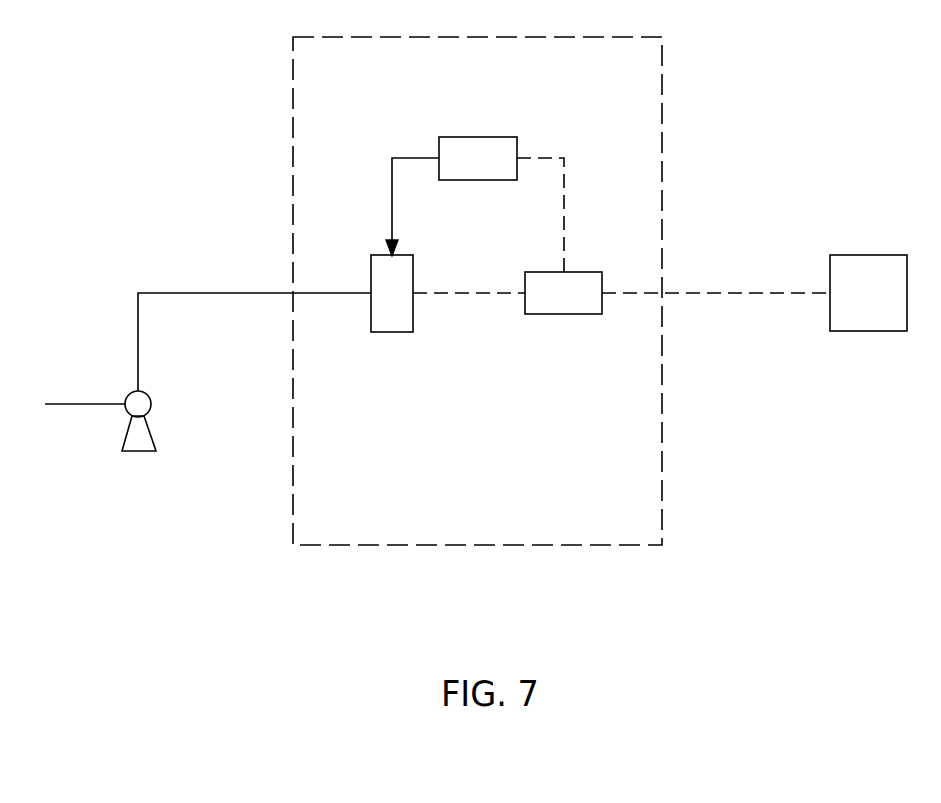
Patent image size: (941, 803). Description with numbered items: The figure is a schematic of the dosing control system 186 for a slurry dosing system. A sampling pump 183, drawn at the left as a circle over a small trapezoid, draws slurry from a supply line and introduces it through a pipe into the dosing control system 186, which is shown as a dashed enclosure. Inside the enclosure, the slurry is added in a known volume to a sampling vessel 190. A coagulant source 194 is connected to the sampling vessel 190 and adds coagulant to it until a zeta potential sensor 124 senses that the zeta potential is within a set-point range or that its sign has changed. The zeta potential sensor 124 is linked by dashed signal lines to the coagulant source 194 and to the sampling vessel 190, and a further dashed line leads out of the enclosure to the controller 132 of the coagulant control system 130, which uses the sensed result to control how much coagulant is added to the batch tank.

The dosing control system 186 is at (663, 120).
The coagulant source 194 is at (478, 137).
The sampling vessel 190 is at (389, 332).
The sampling pump 183 is at (151, 431).
The zeta potential sensor 124 is at (582, 306).
The controller 132 is at (887, 306).
The coagulant control system 130 is at (873, 336).